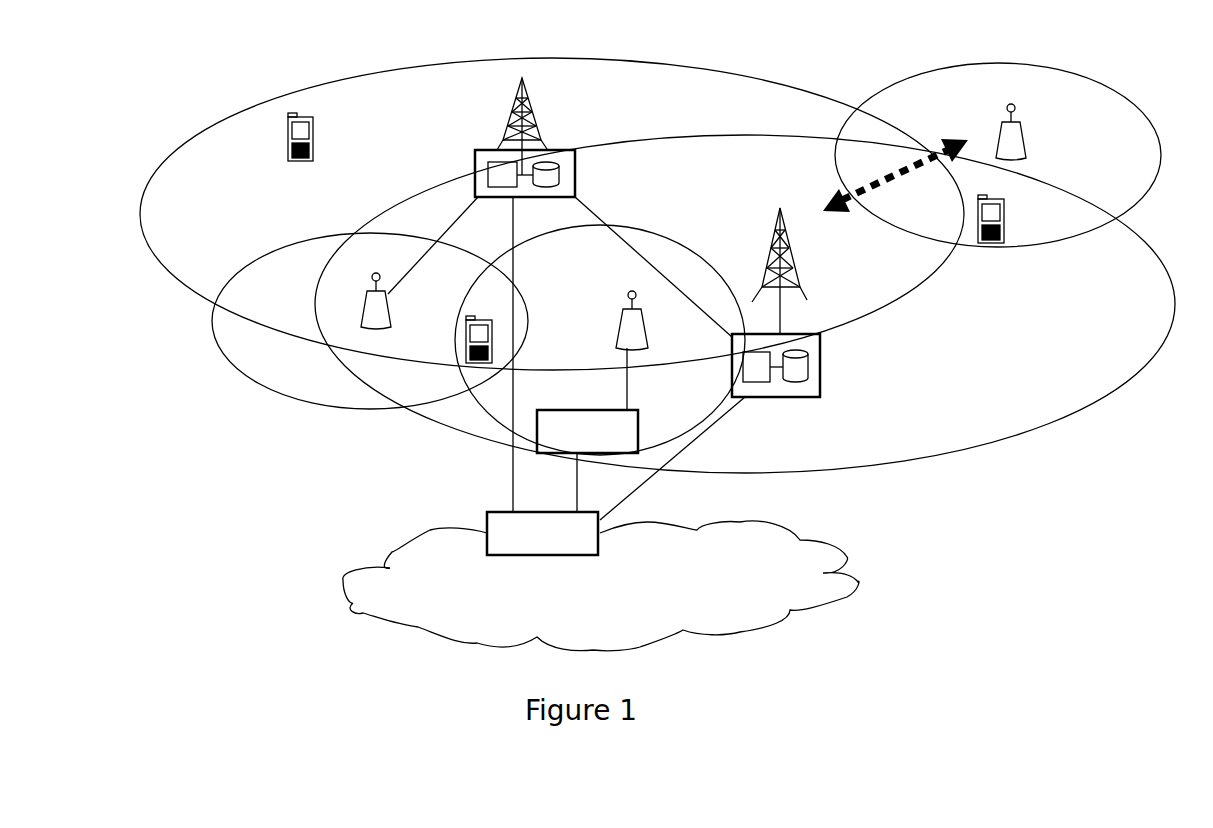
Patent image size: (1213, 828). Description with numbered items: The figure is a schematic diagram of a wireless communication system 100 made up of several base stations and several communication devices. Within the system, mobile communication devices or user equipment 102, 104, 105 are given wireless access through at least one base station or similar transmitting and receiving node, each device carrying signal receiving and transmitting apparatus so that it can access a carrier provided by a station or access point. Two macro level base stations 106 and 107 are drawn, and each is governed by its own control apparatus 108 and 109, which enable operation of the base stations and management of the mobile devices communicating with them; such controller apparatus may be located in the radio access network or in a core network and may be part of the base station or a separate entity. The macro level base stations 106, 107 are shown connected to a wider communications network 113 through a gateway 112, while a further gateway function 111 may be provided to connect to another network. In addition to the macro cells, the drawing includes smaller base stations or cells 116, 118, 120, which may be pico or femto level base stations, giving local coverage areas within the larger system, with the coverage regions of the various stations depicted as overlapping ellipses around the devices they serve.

The wireless communication system 100 is at (216, 103).
The mobile communication device 102 is at (285, 152).
The mobile communication device 104 is at (463, 345).
The mobile communication device 105 is at (994, 244).
The macro level base station 106 is at (507, 122).
The macro level base station 107 is at (802, 280).
The control apparatus 108 is at (475, 164).
The control apparatus 109 is at (813, 388).
The gateway function 111 is at (537, 437).
The gateway 112 is at (488, 512).
The wider communications network 113 is at (418, 563).
The smaller base station 116 is at (998, 133).
The smaller base station 118 is at (624, 336).
The smaller base station 120 is at (367, 302).